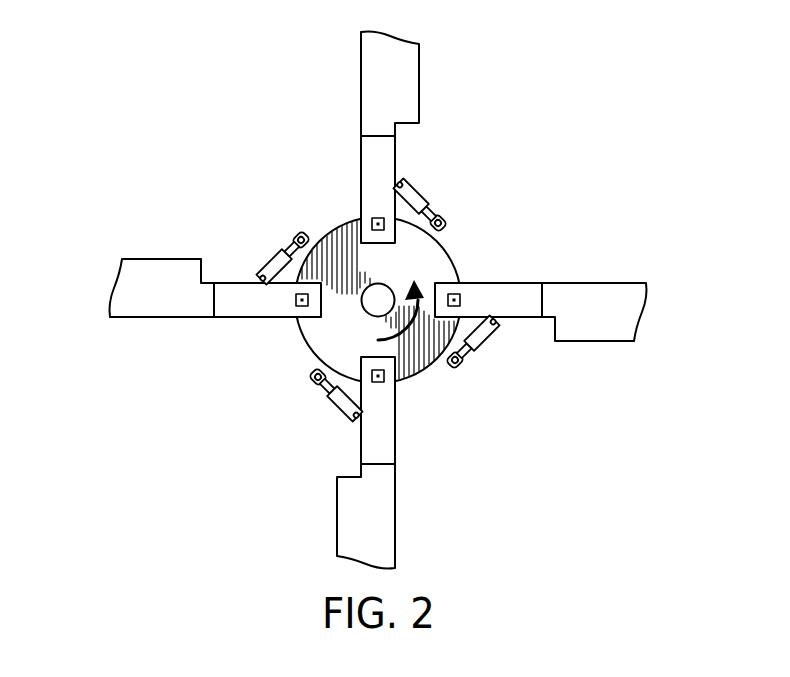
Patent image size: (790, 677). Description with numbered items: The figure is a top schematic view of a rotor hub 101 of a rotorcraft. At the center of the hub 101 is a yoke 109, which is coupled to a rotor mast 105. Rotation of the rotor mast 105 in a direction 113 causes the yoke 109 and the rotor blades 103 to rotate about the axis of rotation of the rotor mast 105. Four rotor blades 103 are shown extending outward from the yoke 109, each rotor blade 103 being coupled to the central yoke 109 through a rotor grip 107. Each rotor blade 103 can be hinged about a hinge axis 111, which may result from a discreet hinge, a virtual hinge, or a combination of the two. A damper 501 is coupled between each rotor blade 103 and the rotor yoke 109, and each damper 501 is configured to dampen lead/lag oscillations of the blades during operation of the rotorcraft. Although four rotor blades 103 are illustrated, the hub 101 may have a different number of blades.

The rotor hub 101 is at (468, 386).
The rotor blade 103 is at (361, 83).
The rotor mast 105 is at (368, 313).
The rotor grip 107 is at (361, 159).
The yoke 109 is at (460, 261).
The hinge axis 111 is at (372, 222).
The direction 113 is at (413, 342).
The damper 501 is at (445, 186).